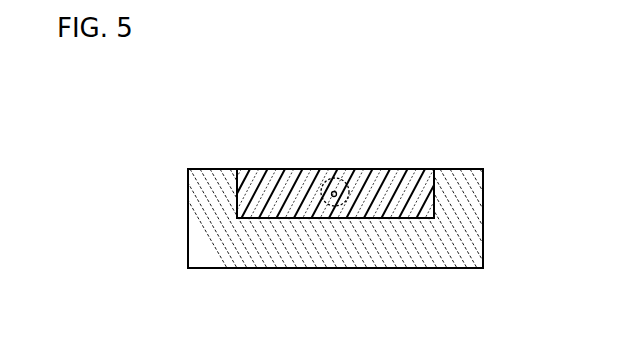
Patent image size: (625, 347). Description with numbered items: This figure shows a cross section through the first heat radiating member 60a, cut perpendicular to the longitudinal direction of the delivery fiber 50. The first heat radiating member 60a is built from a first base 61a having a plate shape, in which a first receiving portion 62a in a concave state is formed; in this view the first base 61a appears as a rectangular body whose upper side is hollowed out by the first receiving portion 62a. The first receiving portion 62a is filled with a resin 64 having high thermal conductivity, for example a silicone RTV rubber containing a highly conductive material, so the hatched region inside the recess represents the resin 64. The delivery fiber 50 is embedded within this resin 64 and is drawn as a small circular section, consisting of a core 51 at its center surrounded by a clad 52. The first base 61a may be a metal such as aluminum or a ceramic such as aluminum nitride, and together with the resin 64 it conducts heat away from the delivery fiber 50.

The first heat radiating member 60a is at (353, 155).
The first base 61a is at (462, 182).
The first receiving portion 62a is at (324, 159).
The resin 64 is at (423, 171).
The delivery fiber 50 is at (330, 166).
The core 51 is at (333, 190).
The clad 52 is at (324, 183).